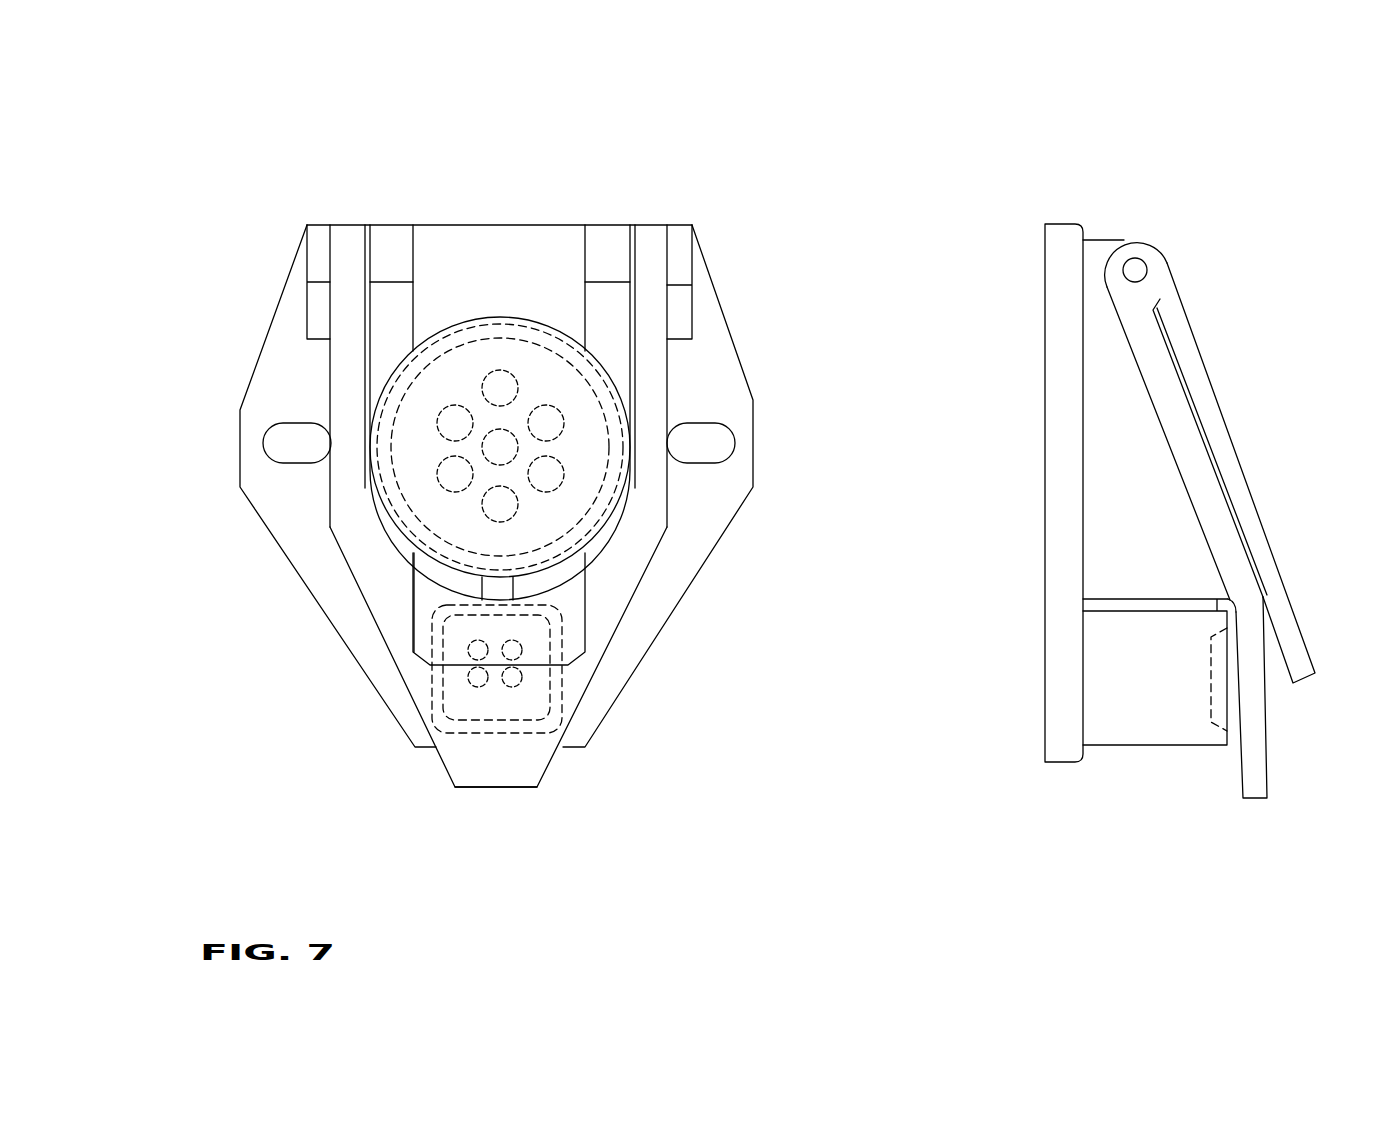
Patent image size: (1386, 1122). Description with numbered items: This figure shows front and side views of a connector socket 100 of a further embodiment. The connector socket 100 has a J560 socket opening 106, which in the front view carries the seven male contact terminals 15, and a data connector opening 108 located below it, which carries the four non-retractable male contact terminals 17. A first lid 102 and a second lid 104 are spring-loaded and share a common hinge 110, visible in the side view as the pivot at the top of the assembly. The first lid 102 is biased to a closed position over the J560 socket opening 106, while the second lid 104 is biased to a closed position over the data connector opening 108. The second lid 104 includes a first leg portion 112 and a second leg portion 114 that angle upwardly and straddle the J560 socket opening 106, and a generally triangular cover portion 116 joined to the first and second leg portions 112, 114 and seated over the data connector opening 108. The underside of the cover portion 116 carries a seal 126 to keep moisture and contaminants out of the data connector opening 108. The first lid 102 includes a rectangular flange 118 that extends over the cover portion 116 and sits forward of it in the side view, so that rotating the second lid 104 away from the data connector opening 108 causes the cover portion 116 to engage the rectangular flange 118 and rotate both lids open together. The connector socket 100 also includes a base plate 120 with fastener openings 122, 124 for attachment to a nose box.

The connector socket 100 is at (510, 130).
The first lid 102 is at (487, 260).
The second lid 104 is at (373, 575).
The J560 socket opening 106 is at (412, 487).
The data connector opening 108 is at (462, 702).
The common hinge 110 is at (708, 247).
The first leg portion 112 is at (345, 385).
The second leg portion 114 is at (650, 392).
The cover portion 116 is at (497, 770).
The rectangular flange 118 is at (560, 598).
The base plate 120 is at (693, 517).
The fastener opening 122 is at (265, 440).
The fastener opening 124 is at (735, 445).
The seal 126 is at (1240, 723).
The male contact terminal 15 is at (556, 405).
The non-retractable male contact terminal 17 is at (478, 684).